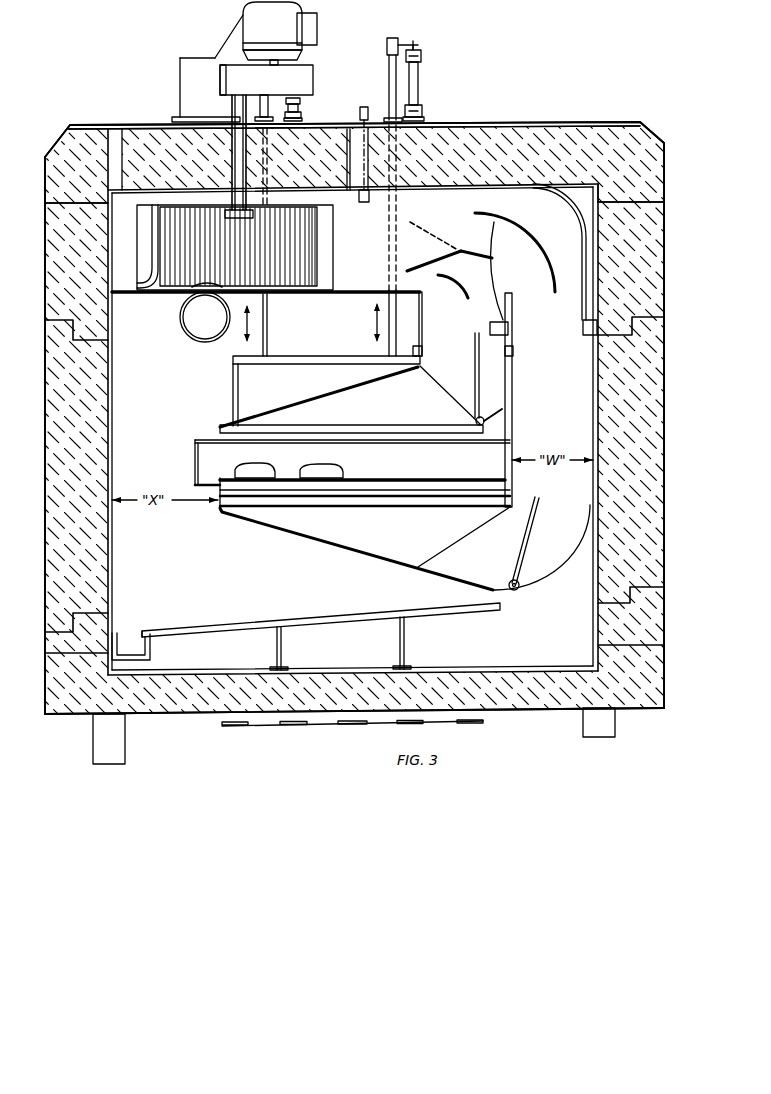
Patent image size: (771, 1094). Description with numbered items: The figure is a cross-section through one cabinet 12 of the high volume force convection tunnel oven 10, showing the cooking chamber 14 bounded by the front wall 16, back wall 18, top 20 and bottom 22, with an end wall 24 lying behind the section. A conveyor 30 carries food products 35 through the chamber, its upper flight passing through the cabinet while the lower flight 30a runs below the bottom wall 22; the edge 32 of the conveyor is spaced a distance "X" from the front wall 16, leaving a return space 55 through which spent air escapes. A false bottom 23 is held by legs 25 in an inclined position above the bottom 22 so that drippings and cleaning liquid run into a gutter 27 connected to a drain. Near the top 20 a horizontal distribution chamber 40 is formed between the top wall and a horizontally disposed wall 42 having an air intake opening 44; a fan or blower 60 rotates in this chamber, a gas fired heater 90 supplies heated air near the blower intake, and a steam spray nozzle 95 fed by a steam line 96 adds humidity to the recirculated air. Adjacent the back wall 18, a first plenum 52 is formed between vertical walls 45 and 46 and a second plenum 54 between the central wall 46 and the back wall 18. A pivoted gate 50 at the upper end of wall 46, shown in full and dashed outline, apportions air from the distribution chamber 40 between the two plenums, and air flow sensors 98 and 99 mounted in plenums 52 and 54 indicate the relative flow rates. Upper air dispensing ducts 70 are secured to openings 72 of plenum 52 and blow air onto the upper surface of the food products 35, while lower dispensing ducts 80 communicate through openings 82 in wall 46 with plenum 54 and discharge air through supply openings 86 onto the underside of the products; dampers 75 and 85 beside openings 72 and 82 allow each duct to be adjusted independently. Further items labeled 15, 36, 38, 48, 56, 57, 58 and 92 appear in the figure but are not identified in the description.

The high volume force convection tunnel oven 10 is at (500, 58).
The cabinet 12 is at (517, 118).
The cooking chamber 14 is at (132, 564).
The support 15 is at (405, 641).
The front wall 16 is at (80, 262).
The back wall 18 is at (634, 191).
The top wall 20 is at (562, 121).
The bottom wall 22 is at (510, 703).
The false bottom 23 is at (300, 620).
The end wall 24 is at (201, 585).
The legs 25 is at (200, 452).
The gutter 27 is at (120, 633).
The conveyor 30 is at (390, 474).
The lower flight 30a is at (306, 728).
The conveyor edge 32 is at (453, 478).
The food products 35 is at (307, 470).
The side wall 36 is at (84, 491).
The right side wall 38 is at (634, 520).
The distribution chamber 40 is at (422, 196).
The horizontally disposed wall 42 is at (372, 294).
The air intake opening 44 is at (170, 291).
The vertical wall 45 is at (423, 314).
The central vertical wall 46 is at (514, 433).
The bracket 48 is at (423, 350).
The gate 50 is at (437, 218).
The first plenum 52 is at (471, 379).
The second plenum 54 is at (569, 389).
The return space 55 is at (123, 455).
The support rod 56 is at (387, 56).
The platform 57 is at (352, 357).
The actuator 58 is at (301, 108).
The blower 60 is at (153, 214).
The upper air dispensing ducts 70 is at (288, 404).
The openings 72 is at (448, 397).
The damper 75 is at (479, 367).
The lower dispensing ducts 80 is at (355, 550).
The openings 82 is at (446, 549).
The damper 85 is at (525, 545).
The air supply openings 86 is at (330, 497).
The gas fired heater 90 is at (190, 78).
The roller 92 is at (184, 334).
The steam spray nozzle 95 is at (364, 203).
The steam line 96 is at (367, 106).
The air flow sensor 98 is at (500, 321).
The air flow sensor 99 is at (584, 322).